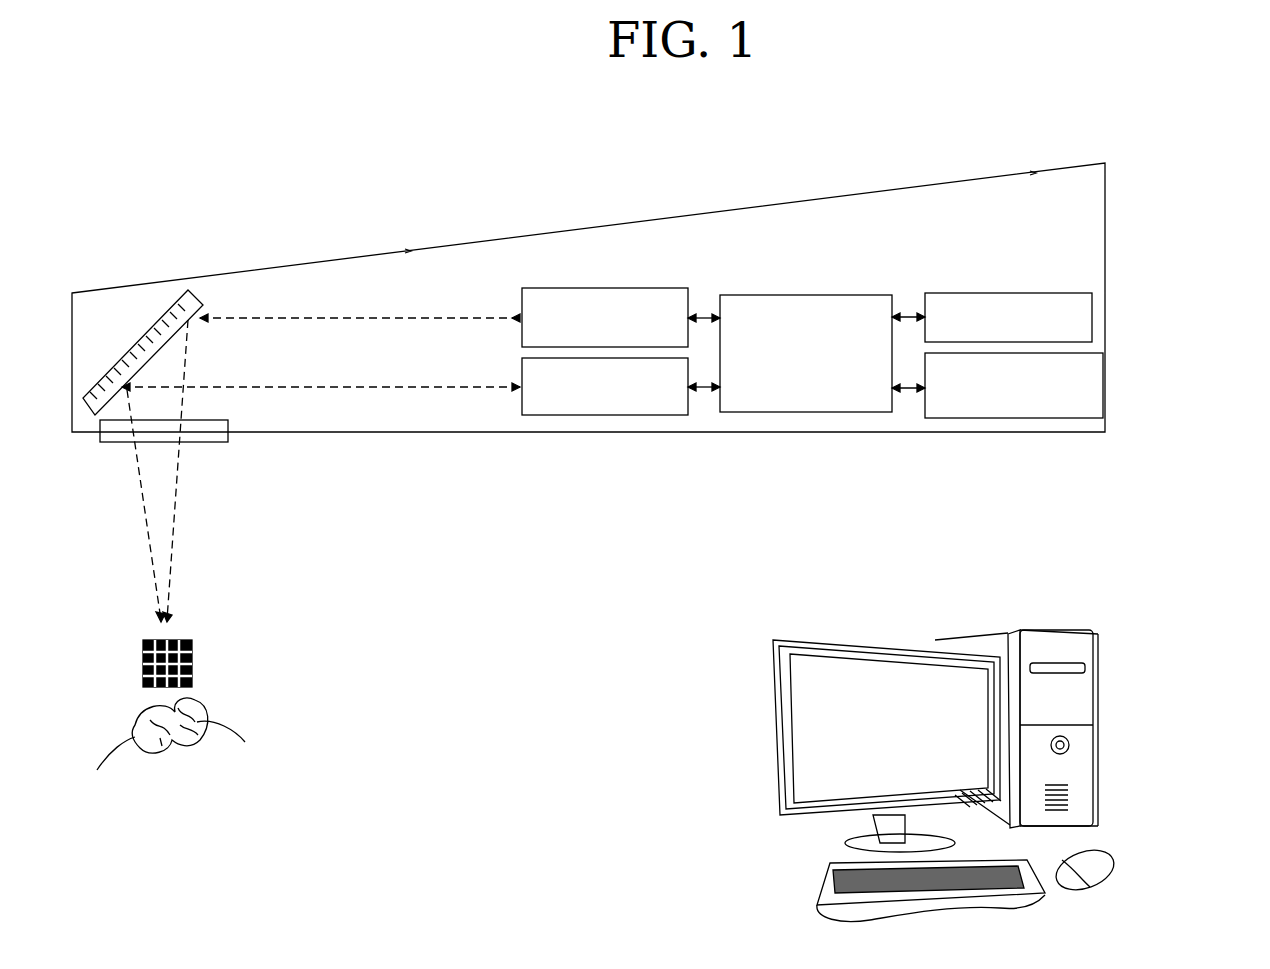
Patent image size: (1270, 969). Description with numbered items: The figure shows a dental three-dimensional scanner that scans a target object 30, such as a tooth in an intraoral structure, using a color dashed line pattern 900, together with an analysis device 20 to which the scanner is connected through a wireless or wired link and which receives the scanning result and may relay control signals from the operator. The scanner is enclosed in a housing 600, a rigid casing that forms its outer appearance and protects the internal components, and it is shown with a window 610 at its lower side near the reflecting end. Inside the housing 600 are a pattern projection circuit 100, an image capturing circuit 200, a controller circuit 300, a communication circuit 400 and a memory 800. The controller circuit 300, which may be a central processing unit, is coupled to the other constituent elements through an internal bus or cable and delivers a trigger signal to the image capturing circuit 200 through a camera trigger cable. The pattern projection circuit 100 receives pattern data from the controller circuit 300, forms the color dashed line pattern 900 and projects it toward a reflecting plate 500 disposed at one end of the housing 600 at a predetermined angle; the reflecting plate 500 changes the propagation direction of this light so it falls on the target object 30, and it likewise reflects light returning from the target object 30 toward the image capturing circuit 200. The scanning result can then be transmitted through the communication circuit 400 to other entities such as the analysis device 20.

The analysis device 20 is at (1110, 652).
The target object 30 is at (188, 752).
The pattern projection circuit 100 is at (574, 288).
The image capturing circuit 200 is at (612, 415).
The controller circuit 300 is at (807, 412).
The communication circuit 400 is at (1013, 418).
The reflecting plate 500 is at (145, 330).
The housing 600 is at (277, 267).
The window 610 is at (205, 442).
The memory 800 is at (1053, 293).
The color dashed line pattern 900 is at (197, 658).